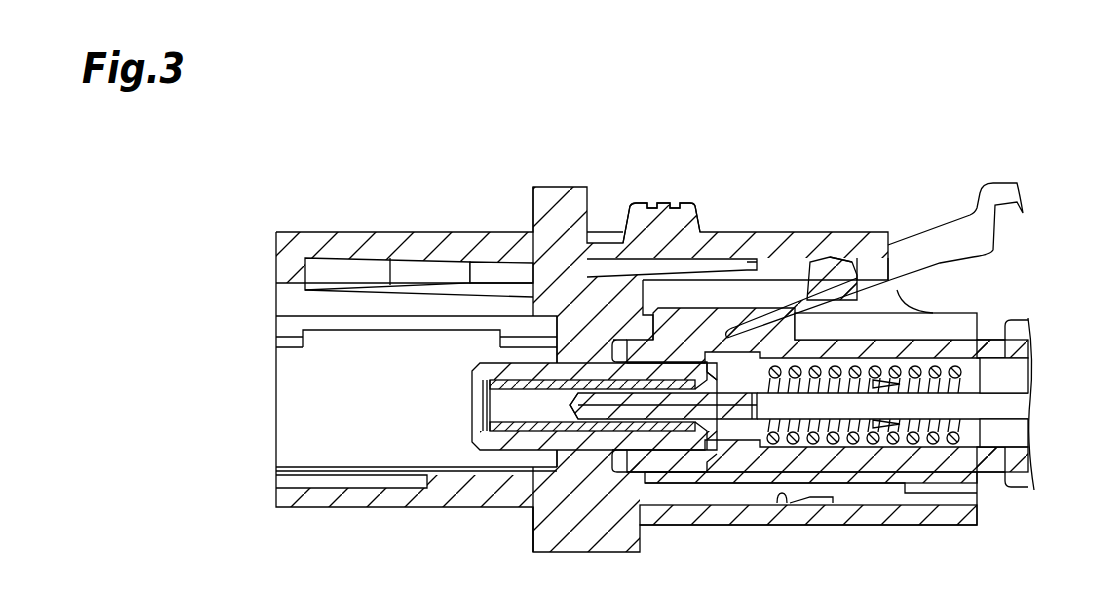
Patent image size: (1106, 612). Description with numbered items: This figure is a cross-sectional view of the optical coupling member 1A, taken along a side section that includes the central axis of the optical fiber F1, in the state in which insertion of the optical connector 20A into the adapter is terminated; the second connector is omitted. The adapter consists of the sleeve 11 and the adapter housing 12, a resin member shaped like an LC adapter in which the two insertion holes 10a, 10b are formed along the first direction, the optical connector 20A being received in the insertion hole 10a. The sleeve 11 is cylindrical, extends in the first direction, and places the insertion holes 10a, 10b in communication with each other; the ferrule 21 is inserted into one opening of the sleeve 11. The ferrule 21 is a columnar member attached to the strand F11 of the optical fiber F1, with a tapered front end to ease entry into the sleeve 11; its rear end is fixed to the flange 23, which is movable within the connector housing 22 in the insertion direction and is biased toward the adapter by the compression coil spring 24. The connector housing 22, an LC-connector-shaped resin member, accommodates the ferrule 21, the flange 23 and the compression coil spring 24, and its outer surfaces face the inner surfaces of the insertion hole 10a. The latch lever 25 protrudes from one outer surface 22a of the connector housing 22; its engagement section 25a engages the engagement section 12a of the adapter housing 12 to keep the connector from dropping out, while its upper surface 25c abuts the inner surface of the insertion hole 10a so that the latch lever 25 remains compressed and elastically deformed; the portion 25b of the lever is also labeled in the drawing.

The optical coupling member 1A is at (916, 101).
The insertion hole 10a is at (785, 503).
The insertion hole 10b is at (362, 492).
The sleeve 11 is at (522, 437).
The adapter housing 12 is at (703, 524).
The engagement section 12a is at (850, 250).
The optical connector 20A is at (998, 474).
The ferrule 21 is at (617, 413).
The connector housing 22 is at (875, 462).
The outer surface 22a is at (892, 340).
The flange 23 is at (747, 440).
The compression coil spring 24 is at (917, 370).
The latch lever 25 is at (932, 227).
The engagement section 25a is at (867, 270).
The lever pivot 25b is at (813, 273).
The upper surface 25c is at (845, 253).
The optical fiber F1 is at (1017, 405).
The strand F11 is at (597, 407).